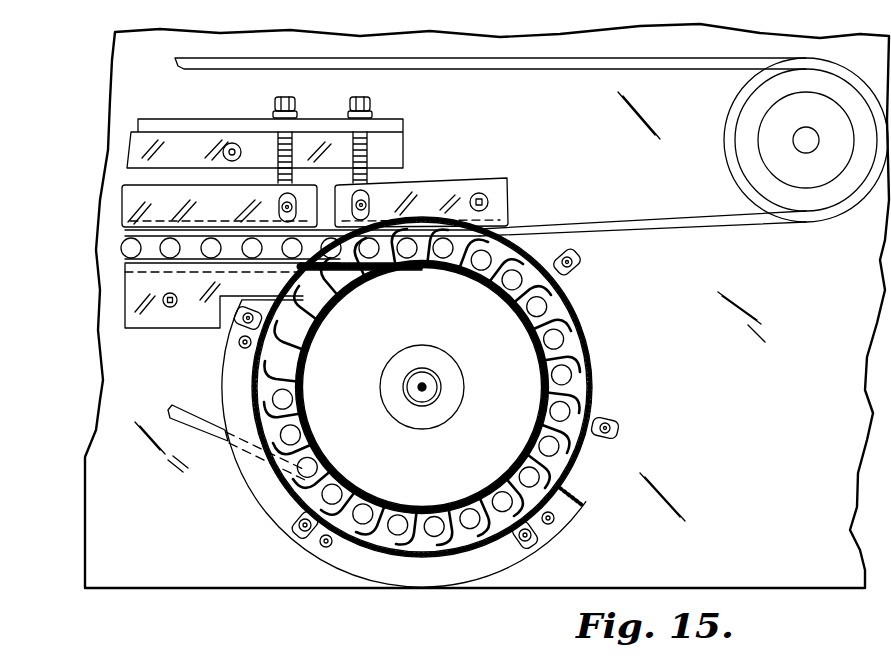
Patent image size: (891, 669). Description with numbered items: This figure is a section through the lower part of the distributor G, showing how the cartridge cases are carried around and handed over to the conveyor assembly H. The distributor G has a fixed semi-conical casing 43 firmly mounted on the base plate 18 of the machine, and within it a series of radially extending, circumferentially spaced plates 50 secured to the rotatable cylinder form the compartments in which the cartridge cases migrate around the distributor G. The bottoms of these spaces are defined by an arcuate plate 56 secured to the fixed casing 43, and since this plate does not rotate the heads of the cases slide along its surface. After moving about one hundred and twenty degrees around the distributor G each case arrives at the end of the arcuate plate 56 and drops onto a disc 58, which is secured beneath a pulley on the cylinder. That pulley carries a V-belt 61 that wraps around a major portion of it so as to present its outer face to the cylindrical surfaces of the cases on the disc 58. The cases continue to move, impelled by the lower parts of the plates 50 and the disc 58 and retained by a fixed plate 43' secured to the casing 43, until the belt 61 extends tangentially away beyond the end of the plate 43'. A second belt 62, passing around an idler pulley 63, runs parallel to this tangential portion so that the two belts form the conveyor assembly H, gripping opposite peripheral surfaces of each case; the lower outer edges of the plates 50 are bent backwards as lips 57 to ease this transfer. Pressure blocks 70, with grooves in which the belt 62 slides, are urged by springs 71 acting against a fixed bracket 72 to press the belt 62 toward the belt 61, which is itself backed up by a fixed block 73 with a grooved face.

The base plate 18 is at (297, 576).
The semi-conical casing 43 is at (404, 417).
The fixed plate 43' is at (632, 425).
The radially extending plates 50 is at (503, 263).
The arcuate plate 56 is at (544, 530).
The lips 57 is at (578, 358).
The disc 58 is at (563, 437).
The V-belt 61 is at (196, 262).
The second belt 62 is at (716, 222).
The idler pulley 63 is at (732, 130).
The pressure blocks 70 is at (130, 200).
The springs 71 is at (278, 148).
The fixed bracket 72 is at (321, 123).
The fixed block 73 is at (149, 316).
The distributor G is at (598, 388).
The conveyor assembly H is at (110, 211).